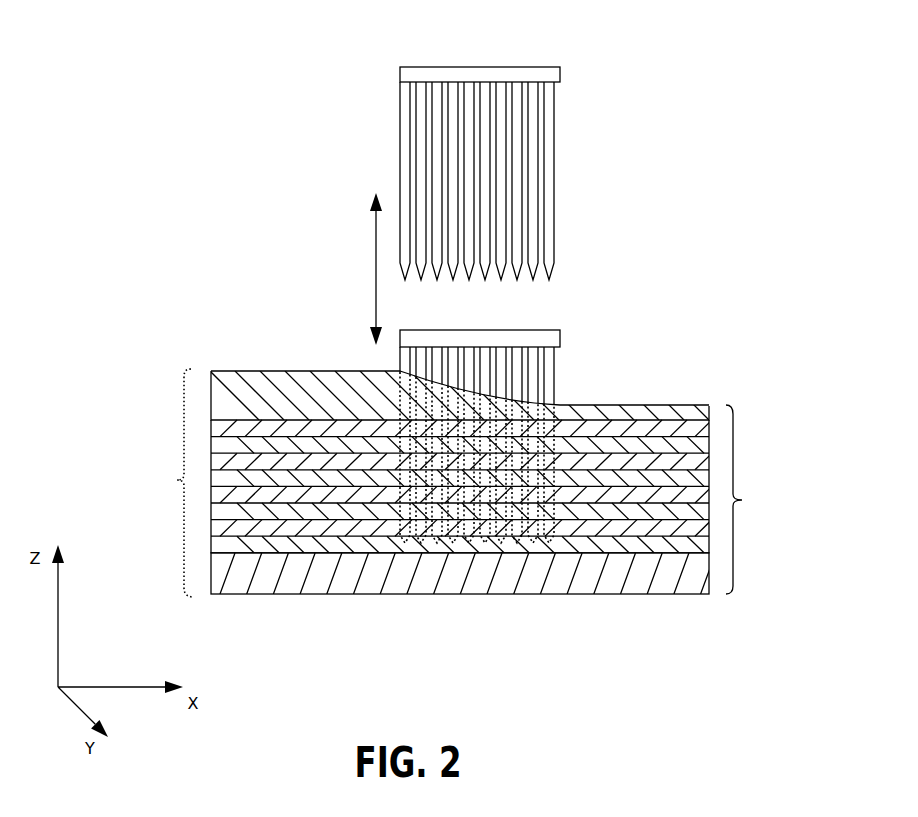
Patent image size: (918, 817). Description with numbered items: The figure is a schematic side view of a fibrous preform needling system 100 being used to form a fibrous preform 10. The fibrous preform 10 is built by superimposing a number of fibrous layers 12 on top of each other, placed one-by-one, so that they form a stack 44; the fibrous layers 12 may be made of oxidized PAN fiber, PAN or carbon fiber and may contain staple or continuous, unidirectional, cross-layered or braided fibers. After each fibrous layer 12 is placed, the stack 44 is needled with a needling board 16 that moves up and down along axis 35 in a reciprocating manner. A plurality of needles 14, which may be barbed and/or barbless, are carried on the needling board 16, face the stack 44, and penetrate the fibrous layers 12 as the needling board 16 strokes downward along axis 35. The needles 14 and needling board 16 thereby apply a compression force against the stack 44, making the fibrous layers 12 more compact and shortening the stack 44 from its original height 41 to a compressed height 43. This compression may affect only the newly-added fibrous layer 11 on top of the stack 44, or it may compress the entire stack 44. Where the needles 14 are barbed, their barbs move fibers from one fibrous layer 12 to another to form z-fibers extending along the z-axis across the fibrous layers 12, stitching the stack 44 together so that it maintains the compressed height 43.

The fibrous preform needling system 100 is at (188, 108).
The needles 14 is at (578, 173).
The needling board 16 is at (405, 69).
The axis 35 is at (375, 292).
The fibrous preform 10 is at (724, 393).
The newly-added fibrous layer 11 is at (217, 400).
The stack 44 is at (225, 350).
The fibrous layers 12 is at (226, 508).
The height 41 is at (171, 483).
The compressed height 43 is at (748, 499).